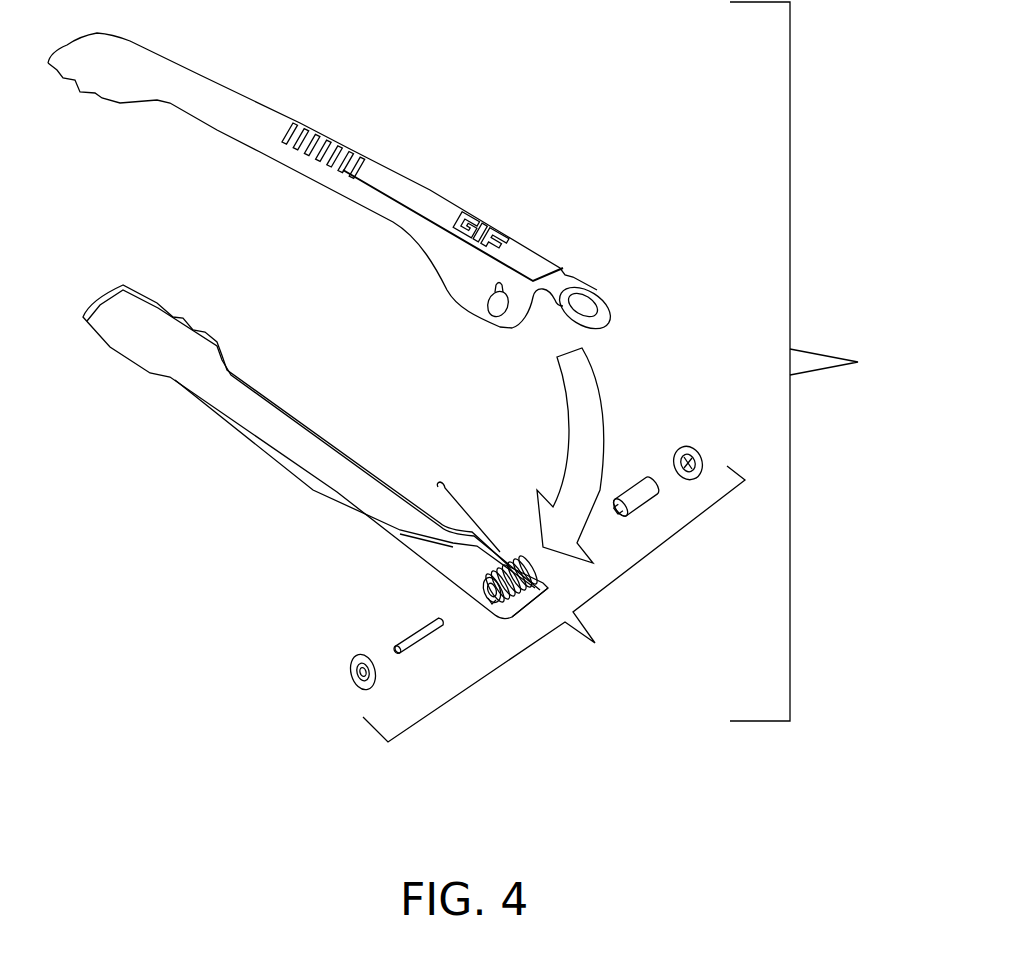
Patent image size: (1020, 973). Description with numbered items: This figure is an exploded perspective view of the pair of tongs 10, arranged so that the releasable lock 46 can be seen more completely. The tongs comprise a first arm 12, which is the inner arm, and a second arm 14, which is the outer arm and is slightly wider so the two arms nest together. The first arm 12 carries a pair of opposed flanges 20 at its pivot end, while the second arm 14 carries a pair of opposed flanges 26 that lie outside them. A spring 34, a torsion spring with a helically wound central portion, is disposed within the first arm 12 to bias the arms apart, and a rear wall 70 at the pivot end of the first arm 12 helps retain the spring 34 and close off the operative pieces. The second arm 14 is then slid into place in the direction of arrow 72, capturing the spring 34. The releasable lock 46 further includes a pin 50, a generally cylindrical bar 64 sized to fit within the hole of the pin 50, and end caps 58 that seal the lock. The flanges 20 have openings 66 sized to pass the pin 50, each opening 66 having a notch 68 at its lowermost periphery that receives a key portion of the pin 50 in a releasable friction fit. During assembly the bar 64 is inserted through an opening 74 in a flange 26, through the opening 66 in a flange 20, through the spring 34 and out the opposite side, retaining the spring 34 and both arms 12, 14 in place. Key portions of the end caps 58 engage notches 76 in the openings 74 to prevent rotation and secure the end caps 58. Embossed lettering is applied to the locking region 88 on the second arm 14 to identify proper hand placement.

The pair of tongs 10 is at (816, 361).
The first arm 12 is at (241, 380).
The second arm 14 is at (217, 131).
The pair of opposed flanges 20 is at (445, 553).
The pair of opposed flanges 26 is at (452, 253).
The spring 34 is at (447, 490).
The releasable lock 46 is at (554, 604).
The pin 50 is at (637, 487).
The end cap 58 is at (684, 447).
The bar 64 is at (398, 636).
The openings 66 is at (480, 586).
The notches 68 is at (486, 601).
The rear wall 70 is at (525, 608).
The arrow 72 is at (573, 443).
The opening 74 is at (490, 308).
The notches 76 is at (494, 284).
The locking region 88 is at (488, 222).